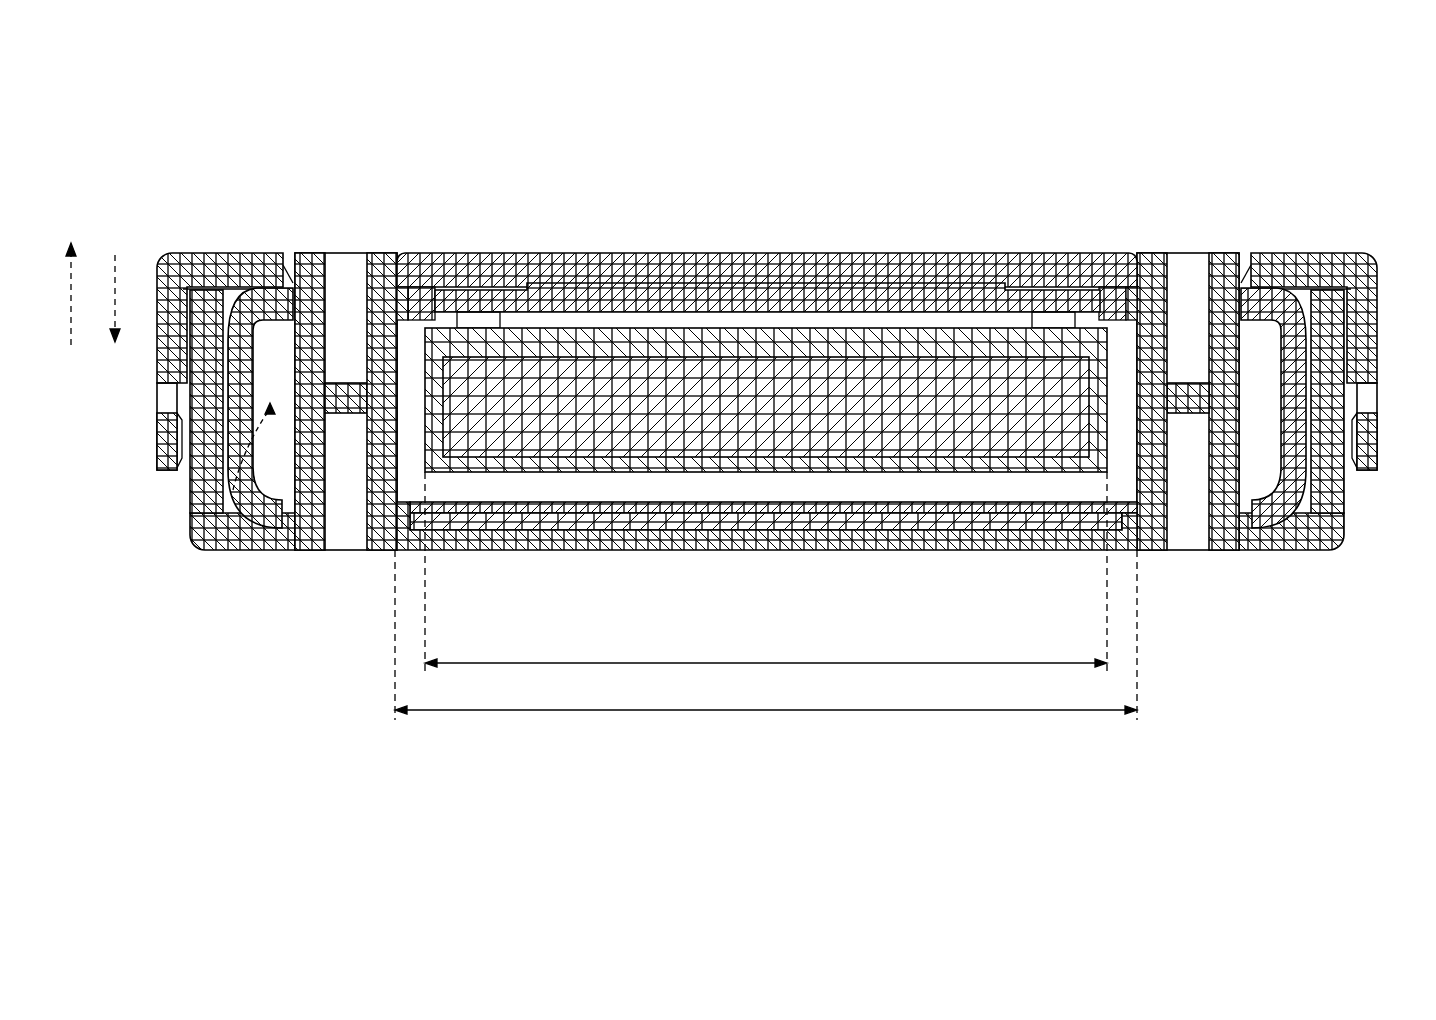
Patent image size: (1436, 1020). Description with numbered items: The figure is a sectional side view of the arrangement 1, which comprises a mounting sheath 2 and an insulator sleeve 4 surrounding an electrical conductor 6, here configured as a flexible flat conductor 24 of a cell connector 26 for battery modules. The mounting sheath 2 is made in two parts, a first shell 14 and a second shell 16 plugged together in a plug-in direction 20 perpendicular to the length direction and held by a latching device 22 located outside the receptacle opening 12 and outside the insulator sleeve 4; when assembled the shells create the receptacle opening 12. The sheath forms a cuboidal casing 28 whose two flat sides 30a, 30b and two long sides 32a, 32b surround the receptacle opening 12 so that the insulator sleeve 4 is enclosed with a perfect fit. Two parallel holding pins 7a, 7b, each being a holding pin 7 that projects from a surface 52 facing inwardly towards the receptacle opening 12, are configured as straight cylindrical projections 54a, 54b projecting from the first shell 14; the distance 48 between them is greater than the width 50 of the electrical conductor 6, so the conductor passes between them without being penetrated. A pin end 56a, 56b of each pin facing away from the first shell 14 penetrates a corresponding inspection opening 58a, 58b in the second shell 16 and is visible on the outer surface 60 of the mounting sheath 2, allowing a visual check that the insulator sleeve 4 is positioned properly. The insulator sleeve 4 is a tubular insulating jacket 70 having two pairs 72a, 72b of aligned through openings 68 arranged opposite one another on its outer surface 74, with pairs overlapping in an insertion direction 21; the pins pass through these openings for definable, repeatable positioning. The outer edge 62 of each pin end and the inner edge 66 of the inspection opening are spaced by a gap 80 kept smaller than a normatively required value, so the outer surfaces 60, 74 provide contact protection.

The arrangement 1 is at (140, 90).
The mounting sheath 2 is at (757, 430).
The insulator sleeve 4 is at (1294, 381).
The electrical conductor 6 is at (766, 326).
The holding pin 7 is at (755, 321).
The holding pin 7a is at (1191, 343).
The holding pin 7b is at (313, 321).
The receptacle opening 12 is at (194, 428).
The first shell 14 is at (1312, 483).
The second shell 16 is at (1370, 256).
The plug-in direction 20 is at (147, 262).
The insertion direction 21 is at (97, 260).
The latching device 22 is at (165, 437).
The flexible flat conductor 24 is at (766, 326).
The cell connector 26 is at (745, 388).
The cuboidal casing 28 is at (757, 430).
The flat side 30a is at (435, 248).
The flat side 30b is at (572, 548).
The long side 32a is at (197, 478).
The long side 32b is at (1322, 415).
The distance 48 is at (775, 711).
The width 50 is at (775, 661).
The surface 52 is at (955, 515).
The cylindrical projection 54a is at (1191, 343).
The cylindrical projection 54b is at (313, 321).
The pin end 56a is at (1188, 168).
The pin end 56b is at (363, 367).
The inspection opening 58a is at (1143, 240).
The inspection opening 58b is at (290, 240).
The outer surface 60 is at (767, 238).
The outer edge 62 is at (1135, 253).
The inner edge 66 is at (1245, 255).
The through opening 68 is at (798, 381).
The tubular insulating jacket 70 is at (1275, 256).
The pair of through openings 72a is at (287, 276).
The pair of through openings 72b is at (1294, 381).
The outer surface 74 is at (560, 283).
The gap 80 is at (398, 253).